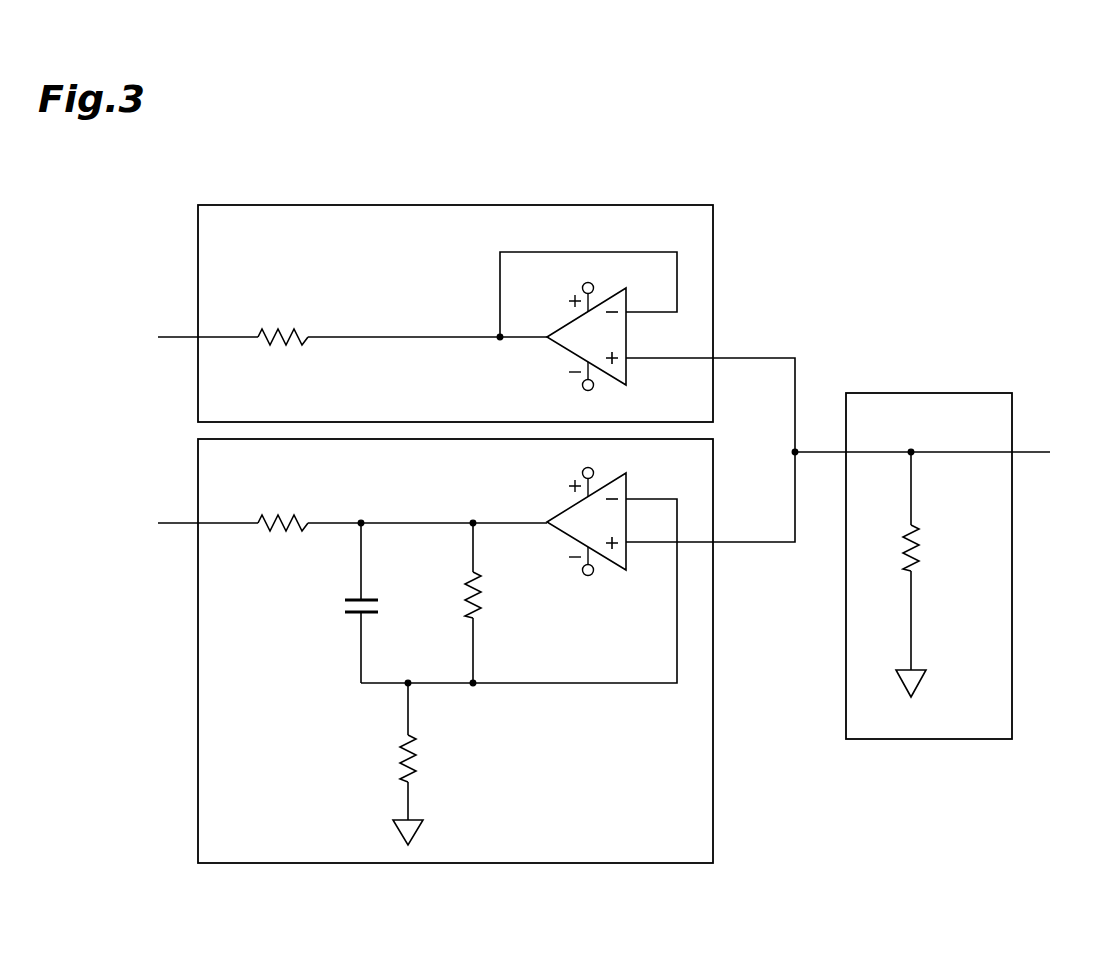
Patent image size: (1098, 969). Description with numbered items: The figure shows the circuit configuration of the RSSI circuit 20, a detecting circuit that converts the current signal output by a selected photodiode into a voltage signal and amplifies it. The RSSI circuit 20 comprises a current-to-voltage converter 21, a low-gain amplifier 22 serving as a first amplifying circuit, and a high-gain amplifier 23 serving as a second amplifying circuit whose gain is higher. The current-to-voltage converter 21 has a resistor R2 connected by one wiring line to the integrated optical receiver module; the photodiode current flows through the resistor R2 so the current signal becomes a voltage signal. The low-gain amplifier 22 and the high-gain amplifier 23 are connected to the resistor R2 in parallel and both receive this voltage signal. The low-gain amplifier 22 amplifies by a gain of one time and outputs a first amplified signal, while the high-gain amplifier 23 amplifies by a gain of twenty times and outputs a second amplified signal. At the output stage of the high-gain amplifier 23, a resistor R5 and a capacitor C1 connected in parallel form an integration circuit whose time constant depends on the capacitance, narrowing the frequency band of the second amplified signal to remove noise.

The RSSI circuit 20 is at (272, 162).
The current-to-voltage converter 21 is at (975, 393).
The low-gain amplifier 22 is at (198, 245).
The high-gain amplifier 23 is at (198, 735).
The capacitor C1 is at (352, 598).
The resistor R5 is at (465, 592).
The resistor R2 is at (920, 552).